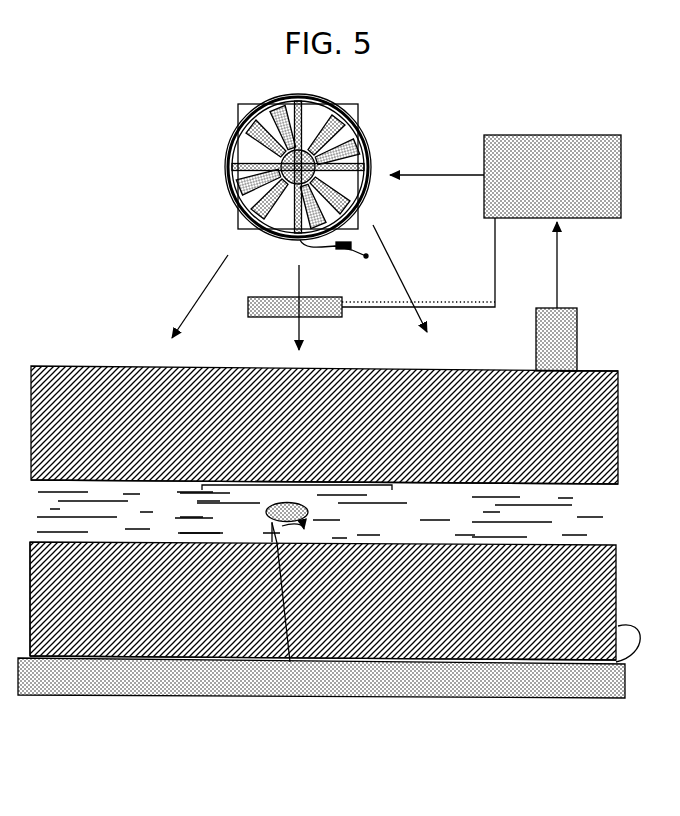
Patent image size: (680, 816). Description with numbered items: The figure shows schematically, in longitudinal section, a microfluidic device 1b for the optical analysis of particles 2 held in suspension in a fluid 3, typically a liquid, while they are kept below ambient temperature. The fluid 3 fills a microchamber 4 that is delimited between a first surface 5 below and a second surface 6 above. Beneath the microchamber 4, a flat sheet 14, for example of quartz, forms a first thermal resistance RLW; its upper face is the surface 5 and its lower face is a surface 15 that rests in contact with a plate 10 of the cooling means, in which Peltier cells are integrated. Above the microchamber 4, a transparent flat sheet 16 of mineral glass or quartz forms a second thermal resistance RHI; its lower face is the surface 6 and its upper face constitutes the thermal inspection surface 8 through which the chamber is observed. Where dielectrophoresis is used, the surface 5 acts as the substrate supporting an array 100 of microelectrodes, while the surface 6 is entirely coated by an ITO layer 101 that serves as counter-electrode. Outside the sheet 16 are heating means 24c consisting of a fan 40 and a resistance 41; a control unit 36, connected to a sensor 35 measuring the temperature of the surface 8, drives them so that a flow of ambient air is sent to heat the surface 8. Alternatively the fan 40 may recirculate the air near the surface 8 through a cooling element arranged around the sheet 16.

The device for performing optical analysis of particles 1b is at (84, 122).
The particles 2 is at (276, 519).
The fluid 3 is at (585, 520).
The microchamber 4 is at (324, 398).
The first surface 5 is at (402, 536).
The second surface 6 is at (163, 493).
The thermal inspection surface 8 is at (216, 362).
The plate 10 is at (337, 703).
The flat sheet 14 is at (27, 640).
The surface 15 is at (148, 662).
The flat sheet 16 is at (104, 388).
The heating means 24c is at (481, 172).
The sensor 35 is at (565, 310).
The control unit 36 is at (587, 140).
The fan 40 is at (386, 135).
The resistance 41 is at (262, 297).
The array of microelectrodes 100 is at (290, 662).
The ITO layer 101 is at (328, 492).
The second thermal resistance RHI is at (600, 375).
The first thermal resistance RLW is at (618, 678).